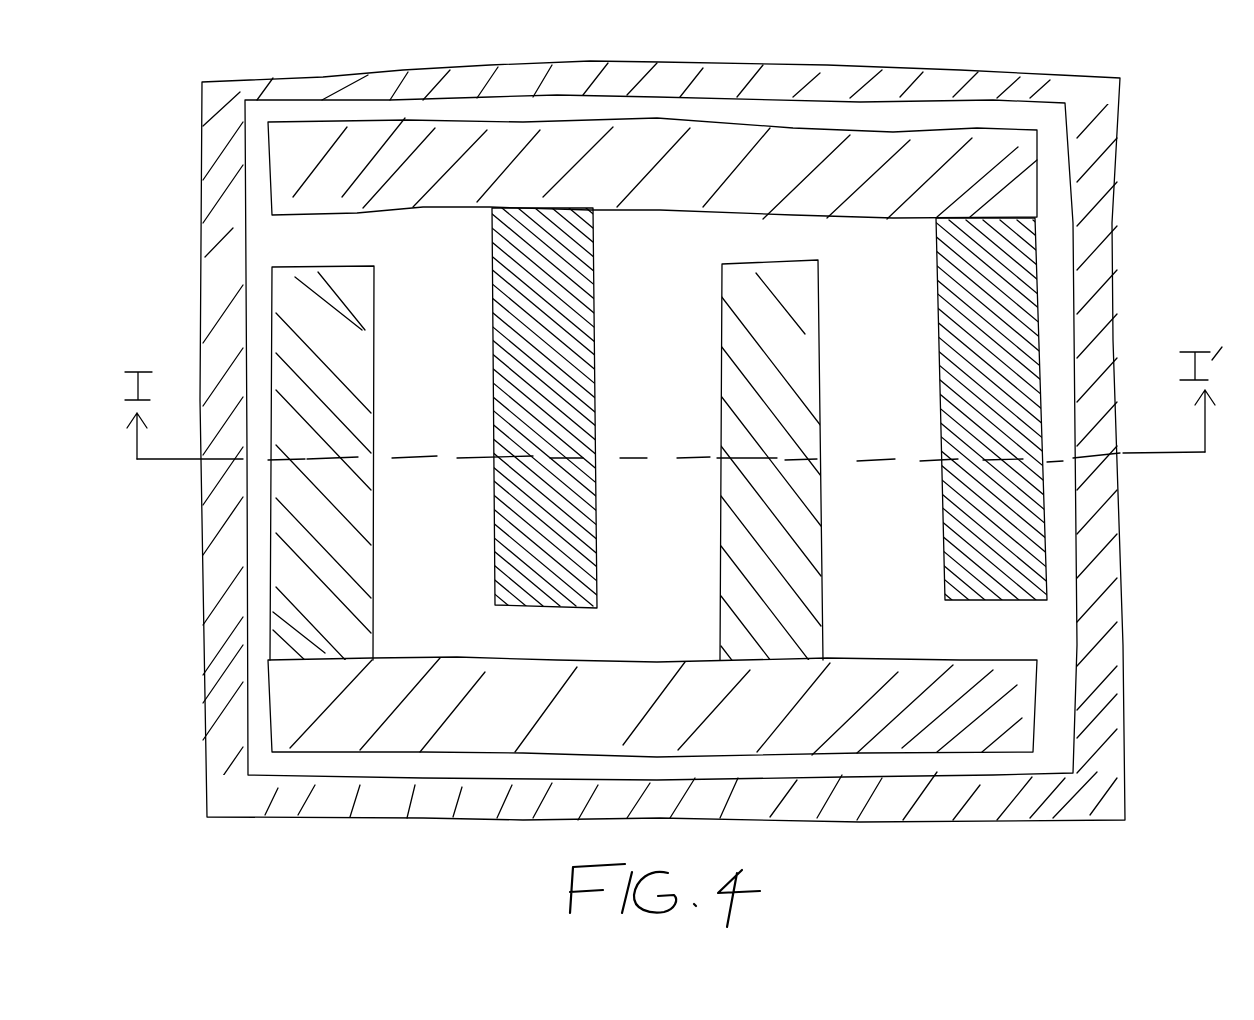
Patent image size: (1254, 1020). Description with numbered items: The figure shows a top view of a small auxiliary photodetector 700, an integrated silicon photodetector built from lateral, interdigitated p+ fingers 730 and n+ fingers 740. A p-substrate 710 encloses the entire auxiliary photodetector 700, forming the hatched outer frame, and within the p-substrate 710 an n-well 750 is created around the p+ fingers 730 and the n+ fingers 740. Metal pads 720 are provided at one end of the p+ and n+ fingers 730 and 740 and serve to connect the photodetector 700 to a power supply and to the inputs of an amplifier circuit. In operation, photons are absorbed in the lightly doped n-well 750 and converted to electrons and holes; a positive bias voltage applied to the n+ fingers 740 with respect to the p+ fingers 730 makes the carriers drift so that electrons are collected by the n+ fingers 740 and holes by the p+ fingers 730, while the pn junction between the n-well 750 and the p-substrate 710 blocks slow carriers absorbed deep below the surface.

The auxiliary photodetector 700 is at (704, 427).
The p-substrate 710 is at (1090, 143).
The metal pads 720 is at (682, 207).
The p+ fingers 730 is at (357, 543).
The n+ fingers 740 is at (590, 368).
The n-well 750 is at (1025, 634).